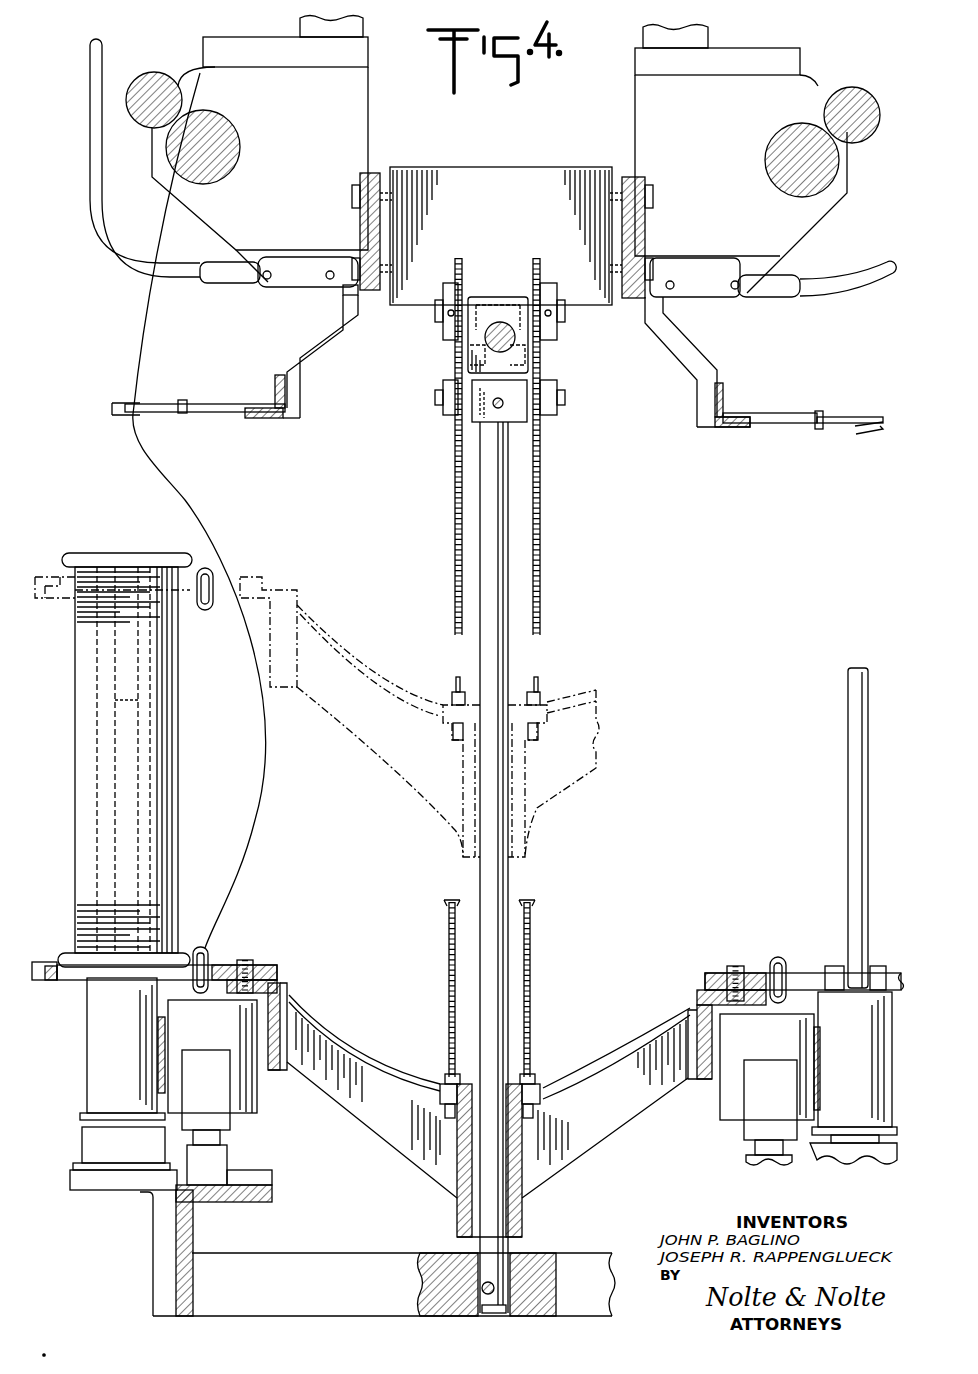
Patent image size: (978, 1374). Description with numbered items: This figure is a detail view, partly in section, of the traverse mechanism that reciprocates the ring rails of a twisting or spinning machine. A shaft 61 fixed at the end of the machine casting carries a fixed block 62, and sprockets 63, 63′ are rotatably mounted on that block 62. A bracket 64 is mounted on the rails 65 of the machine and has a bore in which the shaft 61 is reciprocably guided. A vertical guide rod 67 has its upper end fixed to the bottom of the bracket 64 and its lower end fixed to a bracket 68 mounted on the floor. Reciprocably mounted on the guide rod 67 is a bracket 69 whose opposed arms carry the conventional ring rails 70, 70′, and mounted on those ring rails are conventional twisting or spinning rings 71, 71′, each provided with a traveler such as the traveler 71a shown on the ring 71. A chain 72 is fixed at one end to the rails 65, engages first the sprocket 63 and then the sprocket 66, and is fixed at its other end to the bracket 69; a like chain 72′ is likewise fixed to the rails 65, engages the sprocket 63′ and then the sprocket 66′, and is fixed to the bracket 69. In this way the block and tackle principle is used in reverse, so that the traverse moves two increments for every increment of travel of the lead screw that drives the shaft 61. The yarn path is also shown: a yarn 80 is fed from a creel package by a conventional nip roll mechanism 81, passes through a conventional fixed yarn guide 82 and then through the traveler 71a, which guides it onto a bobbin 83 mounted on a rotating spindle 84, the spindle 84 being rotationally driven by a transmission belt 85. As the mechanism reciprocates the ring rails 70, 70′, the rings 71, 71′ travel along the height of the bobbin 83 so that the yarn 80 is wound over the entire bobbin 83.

The shaft 61 is at (494, 325).
The block 62 is at (512, 300).
The sprocket 63 is at (540, 270).
The sprocket 63′ is at (457, 262).
The bracket 64 is at (476, 420).
The rails 65 is at (500, 150).
The sprocket 66 is at (540, 432).
The sprocket 66′ is at (457, 426).
The vertical guide rod 67 is at (506, 668).
The bracket 68 is at (520, 1265).
The bracket 69 is at (346, 652).
The ring rail 70 is at (330, 588).
The ring rail 70′ is at (690, 1008).
The twisting or spinning ring 71 is at (50, 576).
The twisting or spinning ring 71′ is at (805, 973).
The traveler 71a is at (214, 572).
The chain 72 is at (538, 614).
The chain 72′ is at (455, 570).
The yarn 80 is at (142, 324).
The nip roll mechanism 81 is at (179, 72).
The fixed yarn guide 82 is at (115, 400).
The bobbin 83 is at (176, 540).
The spindle 84 is at (130, 830).
The transmission belt 85 is at (158, 1053).